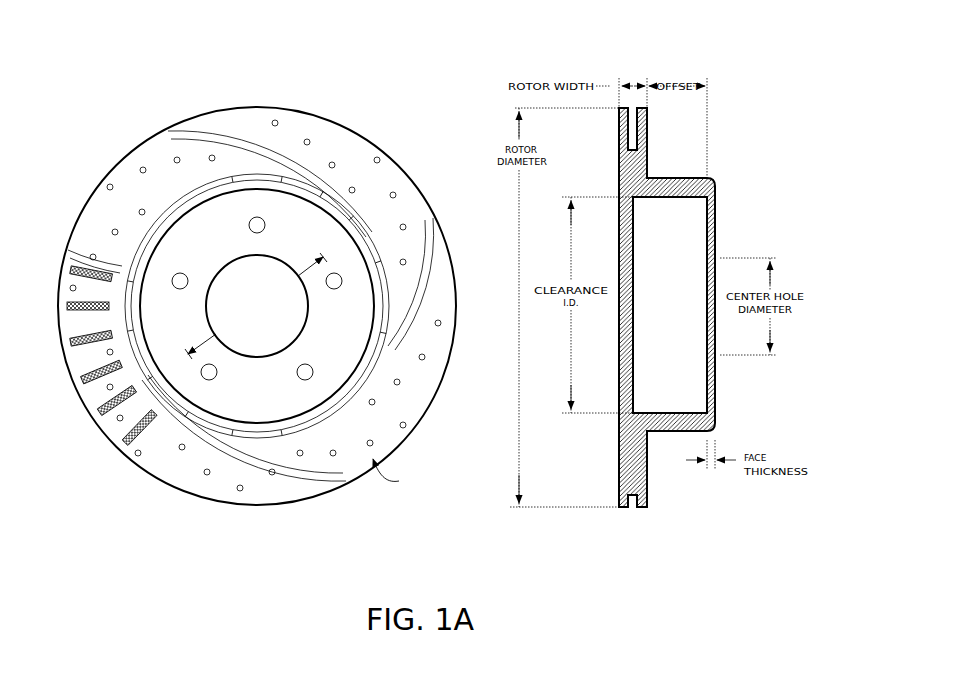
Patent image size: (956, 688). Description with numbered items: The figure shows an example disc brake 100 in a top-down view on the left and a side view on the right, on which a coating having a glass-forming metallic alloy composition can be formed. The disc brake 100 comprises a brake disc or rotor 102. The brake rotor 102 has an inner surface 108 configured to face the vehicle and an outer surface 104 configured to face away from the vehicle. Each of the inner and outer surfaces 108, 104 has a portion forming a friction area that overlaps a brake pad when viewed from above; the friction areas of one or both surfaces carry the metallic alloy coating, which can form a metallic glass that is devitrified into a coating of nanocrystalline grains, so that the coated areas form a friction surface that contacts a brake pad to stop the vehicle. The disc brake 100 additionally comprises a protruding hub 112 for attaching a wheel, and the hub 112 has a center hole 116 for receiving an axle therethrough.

The disc brake 100 is at (268, 56).
The brake rotor 102 is at (324, 101).
The outer surface 104 is at (334, 135).
The inner surface 108 is at (617, 147).
The protruding hub 112 is at (358, 300).
The center hole 116 is at (694, 314).